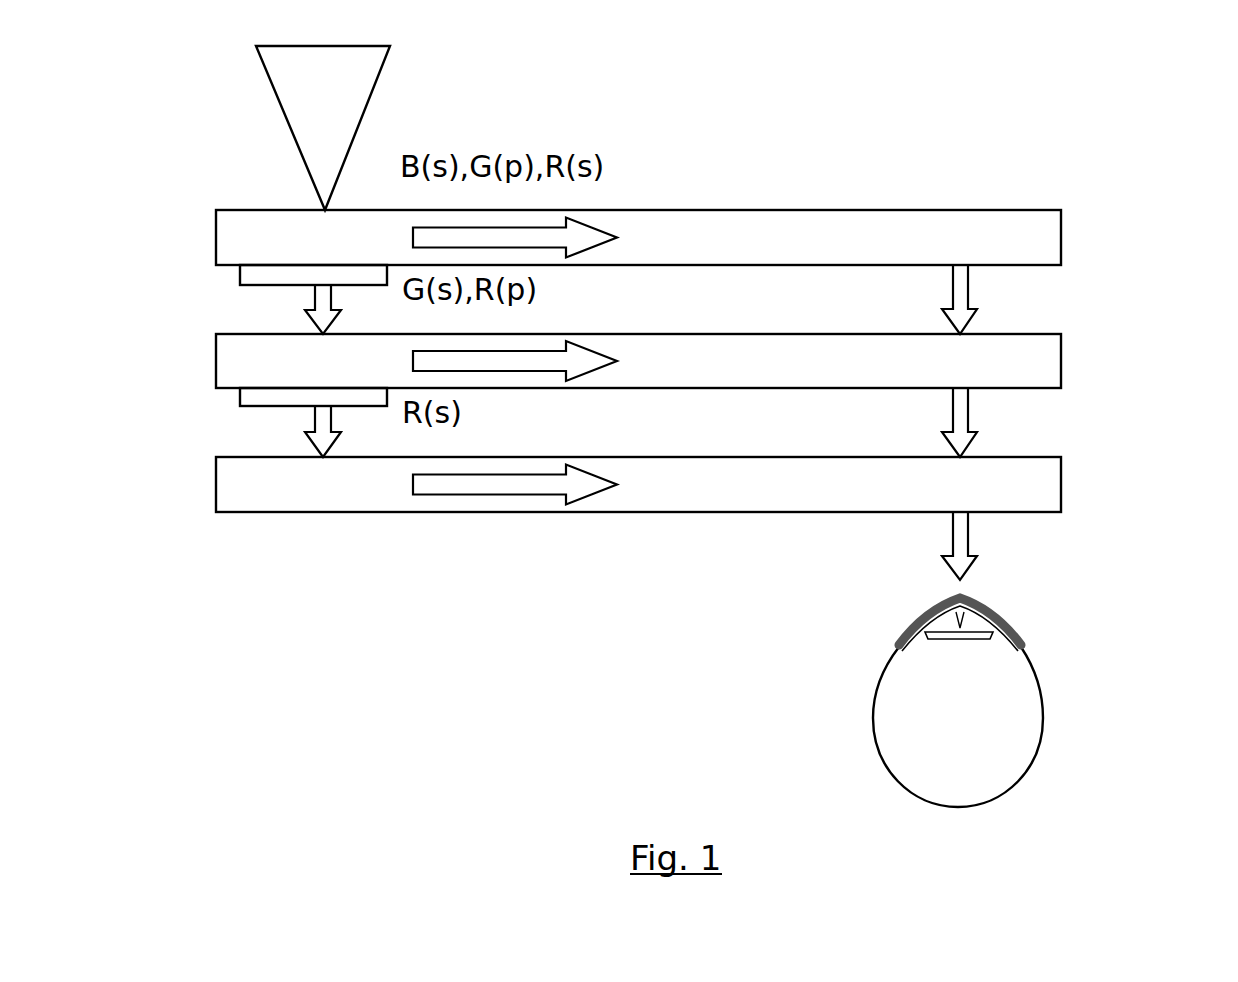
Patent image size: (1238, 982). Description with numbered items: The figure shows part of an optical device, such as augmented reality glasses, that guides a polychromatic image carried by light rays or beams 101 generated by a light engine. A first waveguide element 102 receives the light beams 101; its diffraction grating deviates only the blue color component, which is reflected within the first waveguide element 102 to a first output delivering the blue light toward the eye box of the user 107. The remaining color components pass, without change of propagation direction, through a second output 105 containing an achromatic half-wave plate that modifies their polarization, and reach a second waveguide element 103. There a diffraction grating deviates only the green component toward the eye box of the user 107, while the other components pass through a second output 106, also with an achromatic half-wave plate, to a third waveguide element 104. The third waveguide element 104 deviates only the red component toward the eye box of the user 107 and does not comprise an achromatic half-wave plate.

The light rays or beams 101 is at (347, 82).
The first waveguide element 102 is at (1036, 233).
The second waveguide element 103 is at (1036, 356).
The third waveguide element 104 is at (1036, 482).
The second output 105 is at (250, 273).
The second output 106 is at (252, 394).
The eye box of the user 107 is at (974, 719).